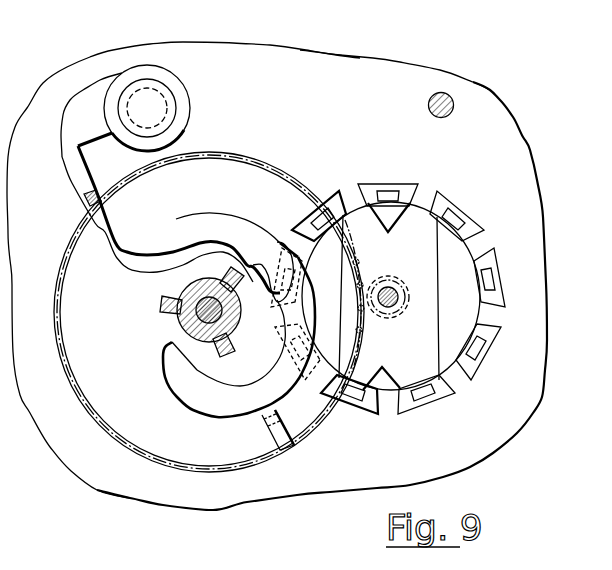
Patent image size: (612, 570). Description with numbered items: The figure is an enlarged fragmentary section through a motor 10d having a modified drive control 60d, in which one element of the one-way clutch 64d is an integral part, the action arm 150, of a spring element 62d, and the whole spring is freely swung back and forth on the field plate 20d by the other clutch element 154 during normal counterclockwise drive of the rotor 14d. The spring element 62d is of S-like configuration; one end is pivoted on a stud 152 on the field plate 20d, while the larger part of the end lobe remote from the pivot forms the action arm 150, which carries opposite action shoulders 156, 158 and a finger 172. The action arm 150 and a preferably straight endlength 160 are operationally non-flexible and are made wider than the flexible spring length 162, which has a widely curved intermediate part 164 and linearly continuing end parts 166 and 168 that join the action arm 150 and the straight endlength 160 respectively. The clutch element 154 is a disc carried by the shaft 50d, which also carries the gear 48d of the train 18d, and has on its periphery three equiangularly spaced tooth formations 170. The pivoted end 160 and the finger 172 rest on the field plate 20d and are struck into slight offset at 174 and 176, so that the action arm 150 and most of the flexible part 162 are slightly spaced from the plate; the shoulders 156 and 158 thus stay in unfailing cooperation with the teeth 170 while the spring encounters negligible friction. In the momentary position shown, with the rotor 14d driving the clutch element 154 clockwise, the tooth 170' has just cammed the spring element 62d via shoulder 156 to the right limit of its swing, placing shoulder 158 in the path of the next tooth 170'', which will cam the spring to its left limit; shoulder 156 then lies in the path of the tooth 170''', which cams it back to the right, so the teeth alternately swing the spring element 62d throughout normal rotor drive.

The motor 10d is at (511, 91).
The field plate 20d is at (322, 70).
The rotor 14d is at (388, 299).
The train 18d is at (369, 325).
The gear 48d is at (96, 422).
The shaft 50d is at (232, 330).
The drive control 60d is at (265, 224).
The spring element 62d is at (82, 192).
The one-way clutch 64d is at (164, 338).
The action arm 150 is at (328, 380).
The stud 152 is at (172, 107).
The clutch element 154 is at (191, 294).
The action shoulder 156 is at (256, 296).
The action shoulder 158 is at (173, 345).
The straight endlength 160 is at (91, 101).
The flexible spring length 162 is at (116, 232).
The intermediate part 164 is at (133, 266).
The end part 166 is at (185, 243).
The end part 168 is at (102, 220).
The tooth formations 170 is at (176, 332).
The tooth 170' is at (253, 255).
The tooth 170'' is at (239, 368).
The tooth 170''' is at (135, 323).
The finger 172 is at (278, 448).
The offset 174 is at (95, 200).
The offset 176 is at (277, 423).